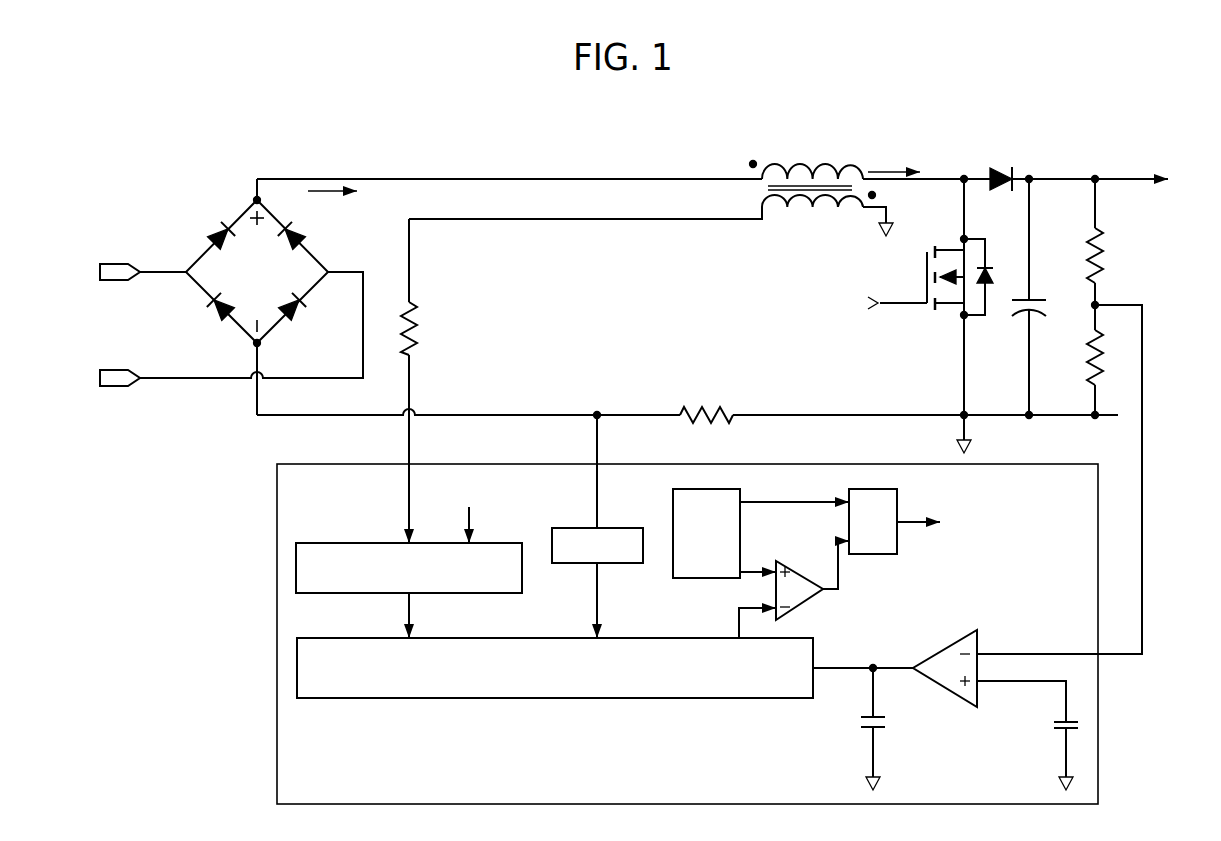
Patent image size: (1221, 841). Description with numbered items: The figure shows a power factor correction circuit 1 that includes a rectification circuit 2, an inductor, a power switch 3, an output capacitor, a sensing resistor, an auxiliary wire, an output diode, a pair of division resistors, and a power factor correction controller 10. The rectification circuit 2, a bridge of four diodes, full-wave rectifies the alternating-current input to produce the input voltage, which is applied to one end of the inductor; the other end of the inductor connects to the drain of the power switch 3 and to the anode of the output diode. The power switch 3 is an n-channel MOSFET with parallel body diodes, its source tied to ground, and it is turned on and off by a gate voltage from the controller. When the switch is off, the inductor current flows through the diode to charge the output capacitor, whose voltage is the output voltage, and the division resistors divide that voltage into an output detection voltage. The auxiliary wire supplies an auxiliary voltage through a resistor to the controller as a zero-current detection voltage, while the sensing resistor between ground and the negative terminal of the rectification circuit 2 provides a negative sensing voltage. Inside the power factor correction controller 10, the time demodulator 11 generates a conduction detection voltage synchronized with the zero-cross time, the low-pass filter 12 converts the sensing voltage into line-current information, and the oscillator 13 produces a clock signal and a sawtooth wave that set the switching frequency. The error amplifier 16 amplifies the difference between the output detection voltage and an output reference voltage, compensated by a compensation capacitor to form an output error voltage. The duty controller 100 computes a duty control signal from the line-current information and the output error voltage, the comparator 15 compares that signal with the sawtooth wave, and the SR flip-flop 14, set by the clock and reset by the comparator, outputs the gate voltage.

The power factor correction circuit 1 is at (1142, 139).
The rectification circuit 2 is at (203, 213).
The power switch 3 is at (945, 320).
The power factor correction controller 10 is at (276, 634).
The time demodulator 11 is at (522, 593).
The low-pass filter 12 is at (573, 563).
The oscillator 13 is at (673, 505).
The SR flip-flop 14 is at (873, 554).
The comparator 15 is at (806, 600).
The error amplifier 16 is at (966, 705).
The duty controller 100 is at (555, 698).